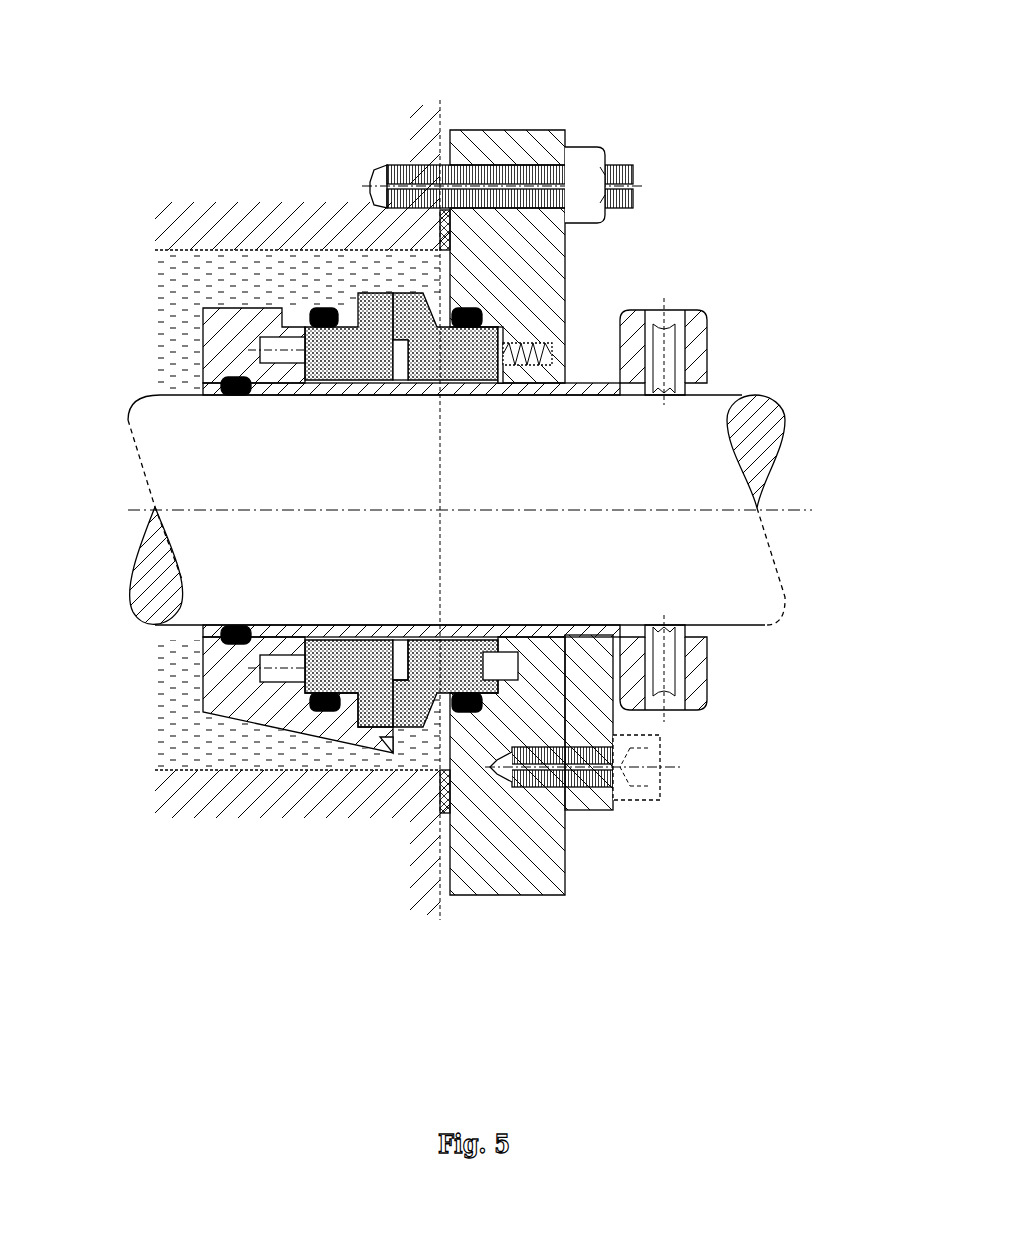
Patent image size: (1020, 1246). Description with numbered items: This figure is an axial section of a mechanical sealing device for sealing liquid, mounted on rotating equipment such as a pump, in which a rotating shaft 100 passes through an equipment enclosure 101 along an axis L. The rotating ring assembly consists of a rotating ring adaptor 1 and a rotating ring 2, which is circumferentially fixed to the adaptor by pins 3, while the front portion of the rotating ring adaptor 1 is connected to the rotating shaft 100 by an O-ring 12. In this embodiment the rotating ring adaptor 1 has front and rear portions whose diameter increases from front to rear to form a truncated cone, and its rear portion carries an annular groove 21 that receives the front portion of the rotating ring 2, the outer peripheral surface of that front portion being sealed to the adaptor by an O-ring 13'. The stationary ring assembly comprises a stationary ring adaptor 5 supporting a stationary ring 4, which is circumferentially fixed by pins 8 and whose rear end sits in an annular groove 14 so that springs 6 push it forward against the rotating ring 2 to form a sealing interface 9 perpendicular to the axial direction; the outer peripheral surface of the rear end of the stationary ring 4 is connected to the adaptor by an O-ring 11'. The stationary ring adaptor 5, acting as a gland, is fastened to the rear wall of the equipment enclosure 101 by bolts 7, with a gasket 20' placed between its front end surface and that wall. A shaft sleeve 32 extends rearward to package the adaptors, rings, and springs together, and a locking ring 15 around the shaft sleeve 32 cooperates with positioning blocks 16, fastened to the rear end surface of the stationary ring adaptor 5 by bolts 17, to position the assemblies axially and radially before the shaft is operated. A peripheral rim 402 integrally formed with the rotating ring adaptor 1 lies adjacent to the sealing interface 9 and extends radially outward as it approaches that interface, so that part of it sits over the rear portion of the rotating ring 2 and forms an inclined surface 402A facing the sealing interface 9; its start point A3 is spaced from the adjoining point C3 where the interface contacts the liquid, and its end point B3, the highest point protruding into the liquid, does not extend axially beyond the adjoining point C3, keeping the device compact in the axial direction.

The rotating shaft 100 is at (757, 430).
The equipment enclosure 101 is at (216, 164).
The rotating ring adaptor 1 is at (226, 350).
The rotating ring 2 is at (318, 348).
The pins 3 is at (262, 672).
The stationary ring 4 is at (473, 347).
The stationary ring adaptor 5 is at (565, 242).
The springs 6 is at (553, 353).
The bolts 7 is at (607, 153).
The pins 8 is at (515, 667).
The sealing interface 9 is at (390, 310).
The O-ring 12 is at (222, 392).
The annular groove 14 is at (550, 385).
The locking ring 15 is at (707, 662).
The positioning blocks 16 is at (622, 708).
The bolts 17 is at (660, 780).
The annular groove 21 is at (290, 690).
The shaft sleeve 32 is at (597, 628).
The peripheral rim 402 is at (375, 292).
The inclined surface 402A is at (377, 732).
The O-ring 13' is at (336, 788).
The O-ring 11' is at (546, 808).
The gasket 20' is at (497, 849).
The start point A3 is at (378, 291).
The end point B3 is at (393, 268).
The adjoining point C3 is at (392, 730).
The axis L is at (498, 521).